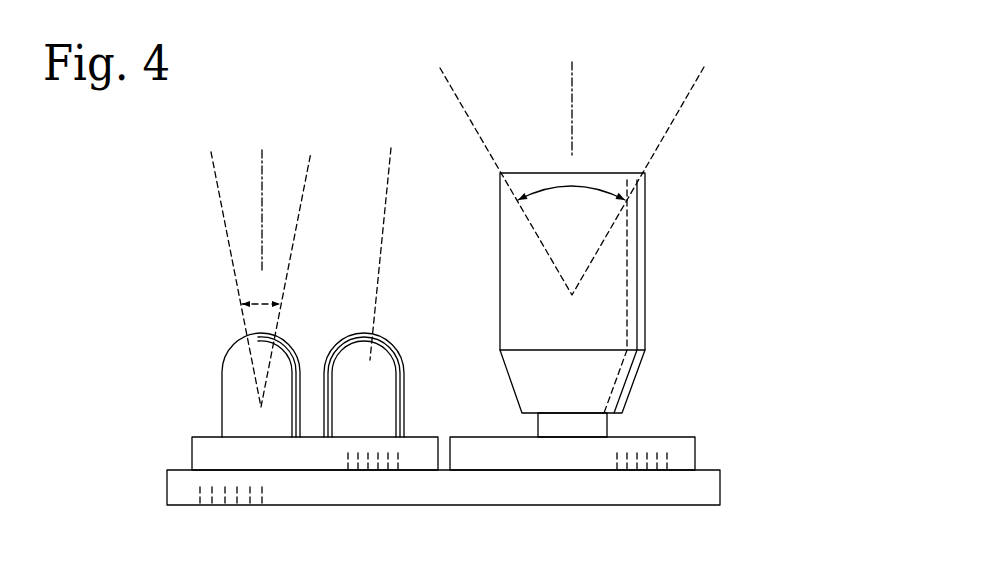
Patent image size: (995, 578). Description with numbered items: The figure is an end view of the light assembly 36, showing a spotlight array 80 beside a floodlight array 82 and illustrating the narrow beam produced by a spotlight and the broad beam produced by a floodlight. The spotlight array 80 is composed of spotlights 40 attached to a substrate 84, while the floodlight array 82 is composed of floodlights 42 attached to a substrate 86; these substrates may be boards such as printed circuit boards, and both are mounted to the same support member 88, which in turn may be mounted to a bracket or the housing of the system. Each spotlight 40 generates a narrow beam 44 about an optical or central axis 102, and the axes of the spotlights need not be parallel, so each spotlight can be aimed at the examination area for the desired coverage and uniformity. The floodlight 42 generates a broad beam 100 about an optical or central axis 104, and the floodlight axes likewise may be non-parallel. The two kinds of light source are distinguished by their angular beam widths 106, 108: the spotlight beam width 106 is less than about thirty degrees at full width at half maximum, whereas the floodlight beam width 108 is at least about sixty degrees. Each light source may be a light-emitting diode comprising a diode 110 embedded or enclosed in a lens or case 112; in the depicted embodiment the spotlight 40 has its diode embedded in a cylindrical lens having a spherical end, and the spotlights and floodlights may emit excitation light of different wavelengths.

The light assembly 36 is at (104, 350).
The spotlight 40 is at (223, 368).
The floodlight 42 is at (645, 245).
The beam 44 is at (228, 242).
The spotlight array 80 is at (165, 423).
The floodlight array 82 is at (693, 408).
The substrate 84 is at (192, 453).
The substrate 86 is at (695, 453).
The support member 88 is at (167, 487).
The beam 100 is at (673, 120).
The optical axis 102 is at (263, 171).
The optical axis 104 is at (573, 82).
The angular beam width 106 is at (268, 301).
The angular beam width 108 is at (570, 189).
The diode 110 is at (360, 407).
The lens or case 112 is at (398, 339).